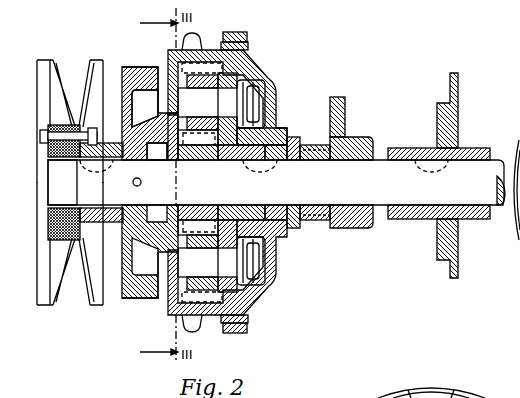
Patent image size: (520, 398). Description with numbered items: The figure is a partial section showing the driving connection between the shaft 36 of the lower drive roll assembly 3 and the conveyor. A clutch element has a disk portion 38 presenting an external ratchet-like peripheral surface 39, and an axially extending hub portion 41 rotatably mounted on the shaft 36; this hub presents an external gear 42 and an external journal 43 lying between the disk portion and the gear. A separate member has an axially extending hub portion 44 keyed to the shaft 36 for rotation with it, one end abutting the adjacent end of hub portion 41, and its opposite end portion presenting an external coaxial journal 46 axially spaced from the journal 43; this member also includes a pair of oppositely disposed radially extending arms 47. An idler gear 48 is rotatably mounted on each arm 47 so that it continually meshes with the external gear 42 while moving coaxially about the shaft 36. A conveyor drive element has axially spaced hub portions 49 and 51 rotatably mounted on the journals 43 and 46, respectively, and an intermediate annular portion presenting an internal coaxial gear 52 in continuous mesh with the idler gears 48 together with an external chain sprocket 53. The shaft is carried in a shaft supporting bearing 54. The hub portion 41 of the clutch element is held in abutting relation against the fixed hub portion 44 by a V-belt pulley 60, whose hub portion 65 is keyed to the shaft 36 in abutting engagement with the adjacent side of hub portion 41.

The lower drive roll assembly 3 is at (452, 87).
The shaft 36 is at (381, 160).
The disk portion 38 is at (123, 97).
The ratchet-like peripheral surface 39 is at (148, 68).
The hub portion 41 is at (177, 158).
The external gear 42 is at (205, 147).
The external journal 43 is at (156, 151).
The hub portion 44 is at (238, 161).
The external coaxial journal 46 is at (279, 161).
The radially extending arms 47 is at (252, 72).
The idler gear 48 is at (200, 120).
The hub portion 49 is at (149, 123).
The hub portion 51 is at (283, 131).
The internal coaxial gear 52 is at (208, 63).
The external chain sprocket 53 is at (180, 42).
The shaft supporting bearing 54 is at (356, 222).
The V-belt pulley 60 is at (50, 62).
The hub portion 65 is at (102, 205).